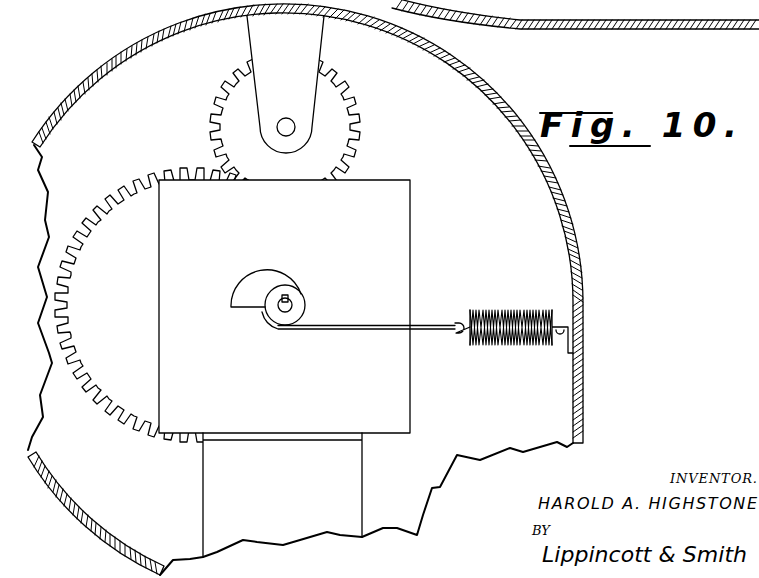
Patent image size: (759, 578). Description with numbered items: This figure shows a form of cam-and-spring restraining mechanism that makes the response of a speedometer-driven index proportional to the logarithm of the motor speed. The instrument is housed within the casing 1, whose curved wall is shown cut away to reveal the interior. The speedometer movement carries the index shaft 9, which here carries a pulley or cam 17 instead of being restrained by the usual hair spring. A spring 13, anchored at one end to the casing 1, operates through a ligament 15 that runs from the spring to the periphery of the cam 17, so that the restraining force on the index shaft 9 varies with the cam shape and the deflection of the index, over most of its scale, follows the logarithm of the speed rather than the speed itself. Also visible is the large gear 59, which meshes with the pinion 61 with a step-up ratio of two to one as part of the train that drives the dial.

The casing 1 is at (470, 80).
The index shaft 9 is at (290, 302).
The spring 13 is at (516, 308).
The ligament 15 is at (370, 325).
The pulley or cam 17 is at (270, 282).
The gear 59 is at (96, 394).
The pinion 61 is at (356, 137).